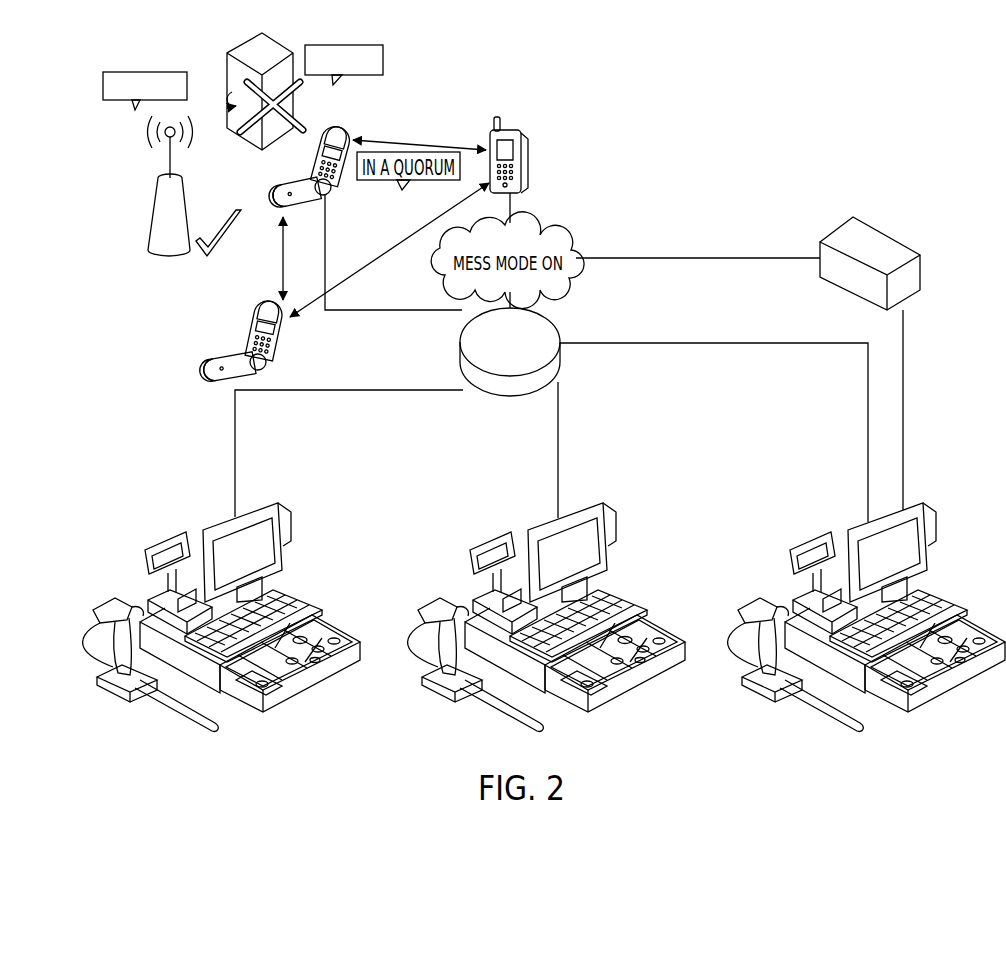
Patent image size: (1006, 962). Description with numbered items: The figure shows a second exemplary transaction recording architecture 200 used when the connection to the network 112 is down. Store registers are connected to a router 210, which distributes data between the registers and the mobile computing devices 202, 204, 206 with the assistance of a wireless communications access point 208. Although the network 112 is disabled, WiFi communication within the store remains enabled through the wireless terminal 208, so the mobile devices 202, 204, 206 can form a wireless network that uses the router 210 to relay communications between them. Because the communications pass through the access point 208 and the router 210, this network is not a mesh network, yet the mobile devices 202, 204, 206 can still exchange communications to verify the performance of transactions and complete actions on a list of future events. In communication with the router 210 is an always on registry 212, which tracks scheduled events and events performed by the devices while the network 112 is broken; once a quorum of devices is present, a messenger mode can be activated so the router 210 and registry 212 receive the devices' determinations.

The network 112 is at (383, 60).
The transaction recording architecture 200 is at (722, 126).
The mobile computing device 202 is at (277, 173).
The mobile computing device 204 is at (530, 158).
The mobile computing device 206 is at (216, 348).
The wireless communications access point 208 is at (157, 213).
The router 210 is at (560, 328).
The always on registry 212 is at (920, 268).